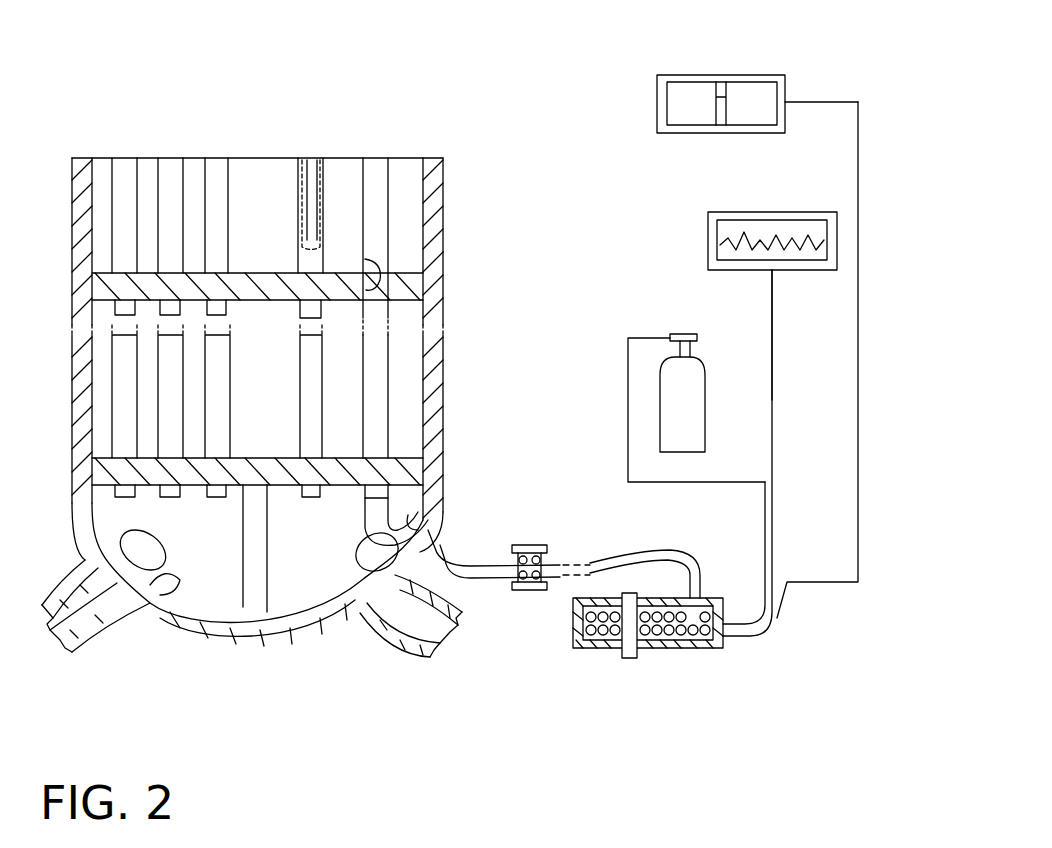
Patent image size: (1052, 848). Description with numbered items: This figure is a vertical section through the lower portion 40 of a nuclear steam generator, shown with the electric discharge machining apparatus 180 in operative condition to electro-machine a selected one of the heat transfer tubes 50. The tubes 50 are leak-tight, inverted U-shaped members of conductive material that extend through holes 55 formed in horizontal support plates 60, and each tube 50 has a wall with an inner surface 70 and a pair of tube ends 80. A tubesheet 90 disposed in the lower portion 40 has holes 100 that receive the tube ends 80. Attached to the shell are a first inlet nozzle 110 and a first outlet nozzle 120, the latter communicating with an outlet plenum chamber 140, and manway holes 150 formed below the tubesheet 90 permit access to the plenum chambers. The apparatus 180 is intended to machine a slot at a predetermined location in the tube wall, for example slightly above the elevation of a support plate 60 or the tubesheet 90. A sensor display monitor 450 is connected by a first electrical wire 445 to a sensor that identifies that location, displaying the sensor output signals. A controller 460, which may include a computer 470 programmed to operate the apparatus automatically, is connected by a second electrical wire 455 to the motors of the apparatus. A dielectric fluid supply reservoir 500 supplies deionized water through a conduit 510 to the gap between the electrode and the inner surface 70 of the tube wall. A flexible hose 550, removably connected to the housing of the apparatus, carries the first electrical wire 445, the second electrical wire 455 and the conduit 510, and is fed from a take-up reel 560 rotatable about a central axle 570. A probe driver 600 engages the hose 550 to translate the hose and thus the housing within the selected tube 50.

The lower portion 40 is at (430, 215).
The heat transfer tubes 50 is at (378, 177).
The holes 55 is at (365, 259).
The horizontal support plates 60 is at (407, 277).
The inner surface 70 is at (298, 163).
The tube ends 80 is at (223, 500).
The tubesheet 90 is at (108, 468).
The holes 100 is at (440, 490).
The first inlet nozzle 110 is at (88, 652).
The first outlet nozzle 120 is at (395, 640).
The outlet plenum chamber 140 is at (440, 528).
The manway holes 150 is at (147, 603).
The electric discharge machining apparatus 180 is at (578, 306).
The first electrical wire 445 is at (772, 317).
The sensor display monitor 450 is at (735, 210).
The second electrical wire 455 is at (855, 363).
The controller 460 is at (700, 75).
The computer 470 is at (723, 97).
The dielectric fluid supply reservoir 500 is at (697, 393).
The conduit 510 is at (628, 433).
The flexible hose 550 is at (630, 547).
The take-up reel 560 is at (580, 650).
The central axle 570 is at (632, 660).
The probe driver 600 is at (533, 545).